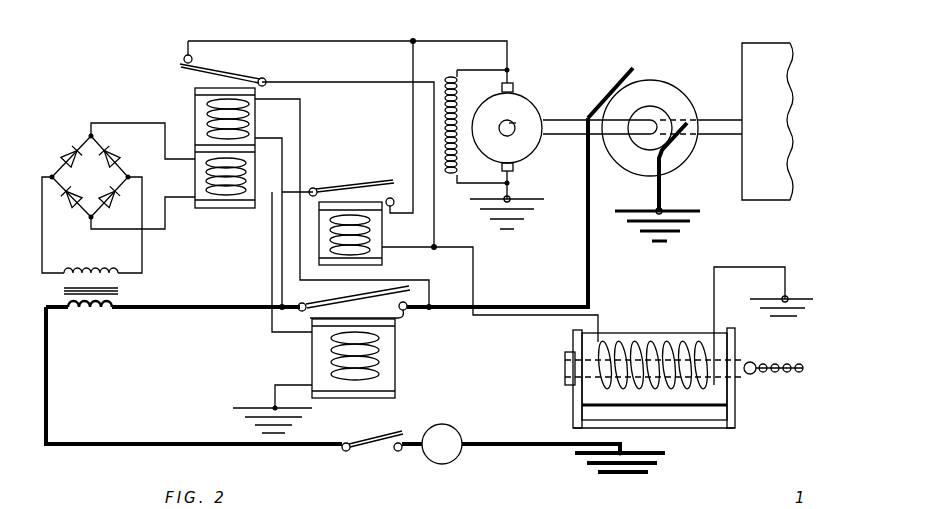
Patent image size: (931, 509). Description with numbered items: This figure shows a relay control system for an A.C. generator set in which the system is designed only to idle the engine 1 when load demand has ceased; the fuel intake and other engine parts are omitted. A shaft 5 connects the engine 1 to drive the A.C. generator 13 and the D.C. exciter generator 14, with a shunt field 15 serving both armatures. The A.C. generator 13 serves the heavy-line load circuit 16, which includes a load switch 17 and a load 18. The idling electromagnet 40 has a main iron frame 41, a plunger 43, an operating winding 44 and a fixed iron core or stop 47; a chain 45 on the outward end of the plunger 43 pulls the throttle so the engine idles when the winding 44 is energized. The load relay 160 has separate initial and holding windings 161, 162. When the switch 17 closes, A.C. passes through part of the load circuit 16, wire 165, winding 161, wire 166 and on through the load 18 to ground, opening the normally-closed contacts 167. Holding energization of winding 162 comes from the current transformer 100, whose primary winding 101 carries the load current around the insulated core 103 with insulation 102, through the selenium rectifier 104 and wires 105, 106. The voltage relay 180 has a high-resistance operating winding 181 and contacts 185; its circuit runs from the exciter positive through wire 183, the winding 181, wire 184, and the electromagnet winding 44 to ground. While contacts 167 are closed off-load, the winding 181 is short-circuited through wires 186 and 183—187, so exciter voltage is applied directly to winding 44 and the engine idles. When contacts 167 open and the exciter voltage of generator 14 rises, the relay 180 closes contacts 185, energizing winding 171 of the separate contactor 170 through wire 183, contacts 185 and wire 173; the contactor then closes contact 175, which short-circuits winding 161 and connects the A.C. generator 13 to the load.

The internal combustion engine 1 is at (773, 50).
The shaft 5 is at (725, 120).
The A.C. armature or generator 13 is at (684, 93).
The D.C. armature or generator 14 is at (535, 108).
The shunt field 15 is at (462, 88).
The load circuit 16 is at (103, 447).
The load switch 17 is at (386, 432).
The load appliance 18 is at (460, 435).
The idling electromagnet 40 is at (670, 366).
The main iron frame 41 is at (736, 429).
The plunger 43 is at (741, 376).
The operating winding 44 is at (679, 343).
The chain 45 is at (774, 373).
The fixed iron core or stop 47 is at (565, 370).
The current transformer 100 is at (100, 264).
The primary winding 101 is at (92, 315).
The insulation 102 is at (120, 283).
The toroidal core 103 is at (64, 292).
The selenium rectifier 104 is at (52, 175).
The positive wire 105 is at (128, 123).
The negative wire 106 is at (160, 229).
The load relay 160 is at (226, 165).
The initial operating winding 161 is at (255, 120).
The holding operating winding 162 is at (245, 199).
The wire 165 is at (302, 150).
The wire 166 is at (282, 187).
The normally-closed contacts 167 is at (199, 64).
The relay or contactor 170 is at (334, 376).
The operating winding 171 is at (396, 358).
The wire 173 is at (270, 270).
The contact 175 is at (406, 312).
The voltage relay 180 is at (367, 244).
The operating winding 181 is at (347, 253).
The wire 183 is at (346, 40).
The wire 184 is at (475, 272).
The normally-closed contacts 185 is at (394, 194).
The wire 186 is at (436, 213).
The wire 187 is at (411, 103).